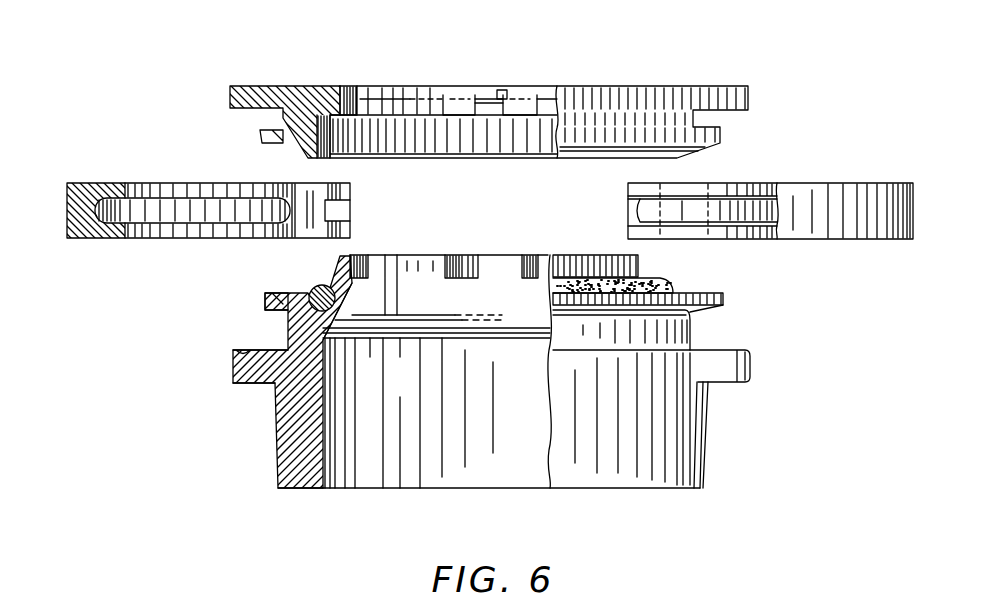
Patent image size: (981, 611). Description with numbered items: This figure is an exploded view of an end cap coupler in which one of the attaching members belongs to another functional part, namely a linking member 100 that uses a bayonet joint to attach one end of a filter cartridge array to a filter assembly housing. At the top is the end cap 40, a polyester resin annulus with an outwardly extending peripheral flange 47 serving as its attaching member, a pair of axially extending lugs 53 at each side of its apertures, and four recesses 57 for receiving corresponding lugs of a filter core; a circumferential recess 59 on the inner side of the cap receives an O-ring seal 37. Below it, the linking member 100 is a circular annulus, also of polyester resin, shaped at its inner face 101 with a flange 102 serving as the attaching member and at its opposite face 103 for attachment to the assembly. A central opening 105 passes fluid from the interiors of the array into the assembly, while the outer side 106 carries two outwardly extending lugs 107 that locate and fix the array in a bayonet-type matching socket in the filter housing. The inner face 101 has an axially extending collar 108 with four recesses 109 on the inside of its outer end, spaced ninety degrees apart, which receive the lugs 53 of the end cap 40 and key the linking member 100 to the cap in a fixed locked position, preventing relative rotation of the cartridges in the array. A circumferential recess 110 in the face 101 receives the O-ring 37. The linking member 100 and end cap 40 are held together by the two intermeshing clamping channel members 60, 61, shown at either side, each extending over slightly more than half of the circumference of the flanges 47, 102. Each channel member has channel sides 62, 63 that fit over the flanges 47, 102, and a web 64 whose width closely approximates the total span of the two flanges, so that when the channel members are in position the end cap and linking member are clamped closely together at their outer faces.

The end cap 40 is at (454, 107).
The circumferential recess 59 is at (325, 116).
The recesses 57 is at (362, 90).
The axially extending lugs 53 is at (523, 112).
The peripheral flange 47 is at (260, 140).
The clamping channel member 60 is at (459, 208).
The clamping channel member 61 is at (850, 182).
The channel side 62 is at (128, 184).
The channel side 63 is at (127, 239).
The web 64 is at (67, 215).
The linking member 100 is at (424, 370).
The inner face 101 is at (548, 262).
The flange 102 is at (263, 297).
The face 103 is at (288, 515).
The central opening 105 is at (502, 466).
The outer side 106 is at (695, 444).
The lugs 107 is at (238, 372).
The collar 108 is at (352, 258).
The recesses 109 is at (473, 268).
The circumferential recess 110 is at (322, 318).
The O-ring seal 37 is at (316, 284).